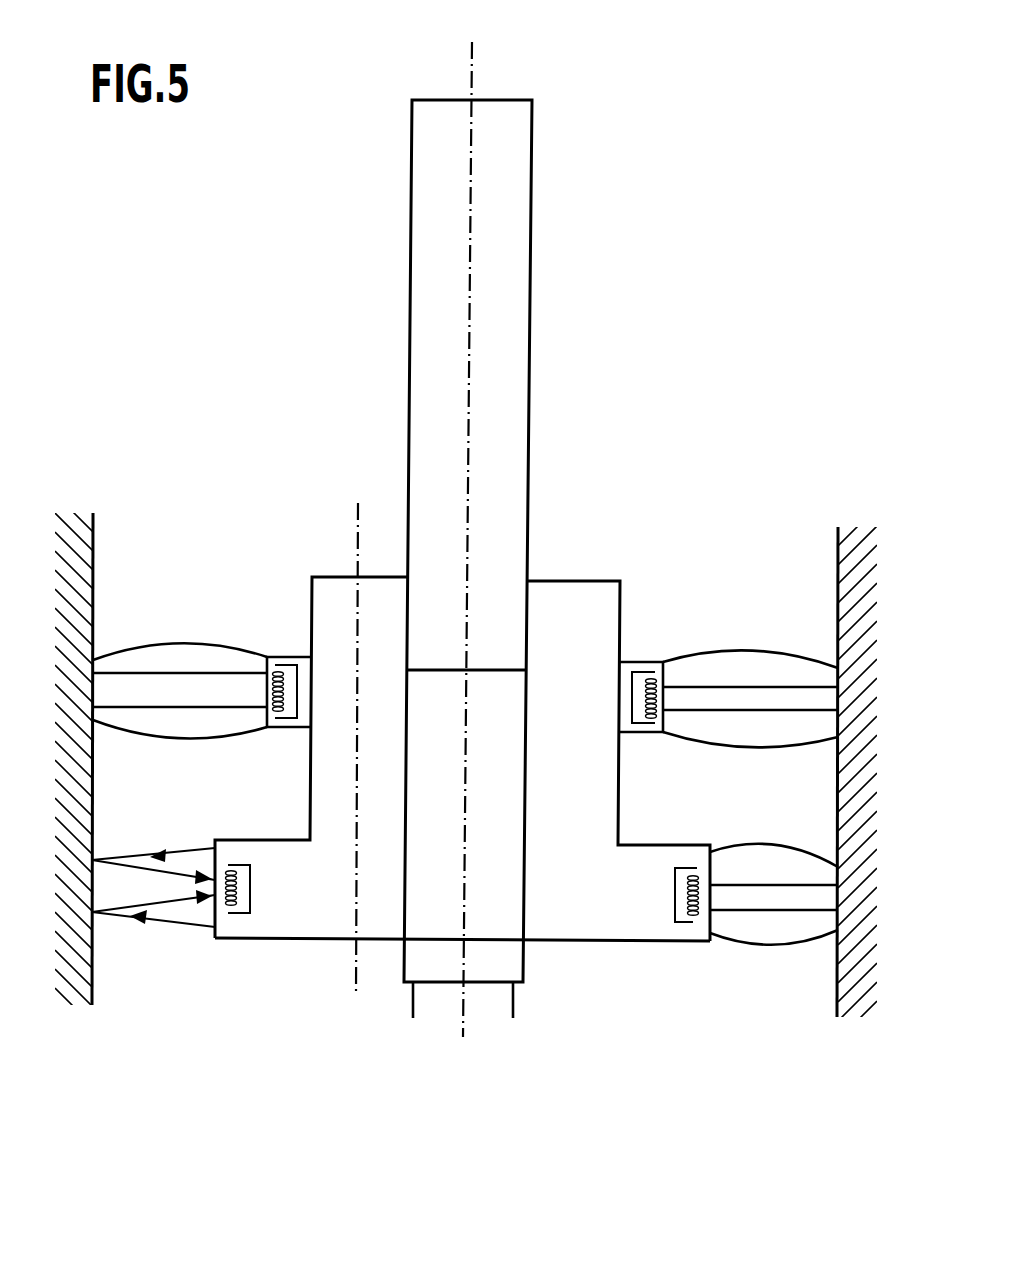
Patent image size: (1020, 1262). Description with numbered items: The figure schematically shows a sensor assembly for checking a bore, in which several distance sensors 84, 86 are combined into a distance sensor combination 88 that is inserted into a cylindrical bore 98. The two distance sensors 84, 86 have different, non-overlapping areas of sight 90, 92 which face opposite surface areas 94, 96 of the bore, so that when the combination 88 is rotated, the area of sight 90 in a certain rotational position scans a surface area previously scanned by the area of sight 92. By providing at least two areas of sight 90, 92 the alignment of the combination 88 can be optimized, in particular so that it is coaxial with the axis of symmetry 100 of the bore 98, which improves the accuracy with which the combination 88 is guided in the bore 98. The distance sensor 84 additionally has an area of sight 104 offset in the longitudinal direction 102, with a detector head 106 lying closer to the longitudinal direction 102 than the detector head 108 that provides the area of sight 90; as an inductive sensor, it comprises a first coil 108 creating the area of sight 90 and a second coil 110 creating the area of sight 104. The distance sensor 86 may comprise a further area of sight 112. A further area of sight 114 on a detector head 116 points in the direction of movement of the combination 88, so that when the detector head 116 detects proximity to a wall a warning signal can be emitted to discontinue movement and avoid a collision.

The distance sensor 84 is at (335, 595).
The distance sensor 86 is at (574, 580).
The distance sensor combination 88 is at (460, 1064).
The area of sight 90 is at (163, 960).
The area of sight 92 is at (782, 925).
The surface area of bore 94 is at (93, 540).
The surface area of bore 96 is at (840, 555).
The bore 98 is at (745, 507).
The axis of symmetry 100 is at (468, 62).
The longitudinal direction 102 is at (358, 510).
The area of sight 104 is at (155, 662).
The detector head 106 is at (267, 690).
The first coil 108 is at (215, 846).
The second coil 110 is at (298, 655).
The further area of sight 112 is at (705, 670).
The area of sight 114 is at (513, 1000).
The detector head 116 is at (418, 961).